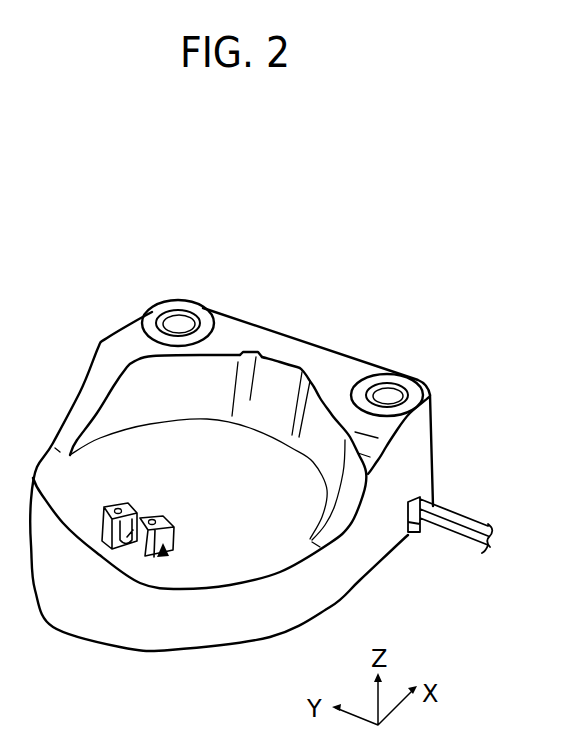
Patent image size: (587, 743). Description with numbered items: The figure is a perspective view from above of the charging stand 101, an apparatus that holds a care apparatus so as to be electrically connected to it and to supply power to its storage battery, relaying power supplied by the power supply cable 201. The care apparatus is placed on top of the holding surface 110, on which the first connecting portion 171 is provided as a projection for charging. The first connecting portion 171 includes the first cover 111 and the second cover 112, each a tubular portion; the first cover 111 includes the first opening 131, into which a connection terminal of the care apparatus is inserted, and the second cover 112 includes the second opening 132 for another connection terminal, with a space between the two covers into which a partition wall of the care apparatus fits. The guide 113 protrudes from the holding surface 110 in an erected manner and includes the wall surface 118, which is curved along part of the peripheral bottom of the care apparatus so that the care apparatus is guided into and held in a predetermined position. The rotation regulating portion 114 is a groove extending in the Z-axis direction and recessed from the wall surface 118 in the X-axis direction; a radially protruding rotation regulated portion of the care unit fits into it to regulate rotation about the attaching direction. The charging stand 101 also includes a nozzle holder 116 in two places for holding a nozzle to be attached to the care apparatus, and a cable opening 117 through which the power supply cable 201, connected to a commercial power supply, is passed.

The charging stand 101 is at (501, 277).
The holding surface 110 is at (193, 493).
The first cover 111 is at (108, 549).
The second cover 112 is at (147, 553).
The guide 113 is at (328, 363).
The rotation regulating portion 114 is at (278, 377).
The nozzle holder 116 is at (177, 330).
The cable opening 117 is at (415, 534).
The wall surface 118 is at (138, 380).
The first opening 131 is at (117, 505).
The second opening 132 is at (152, 515).
The first connecting portion 171 is at (164, 560).
The power supply cable 201 is at (462, 513).